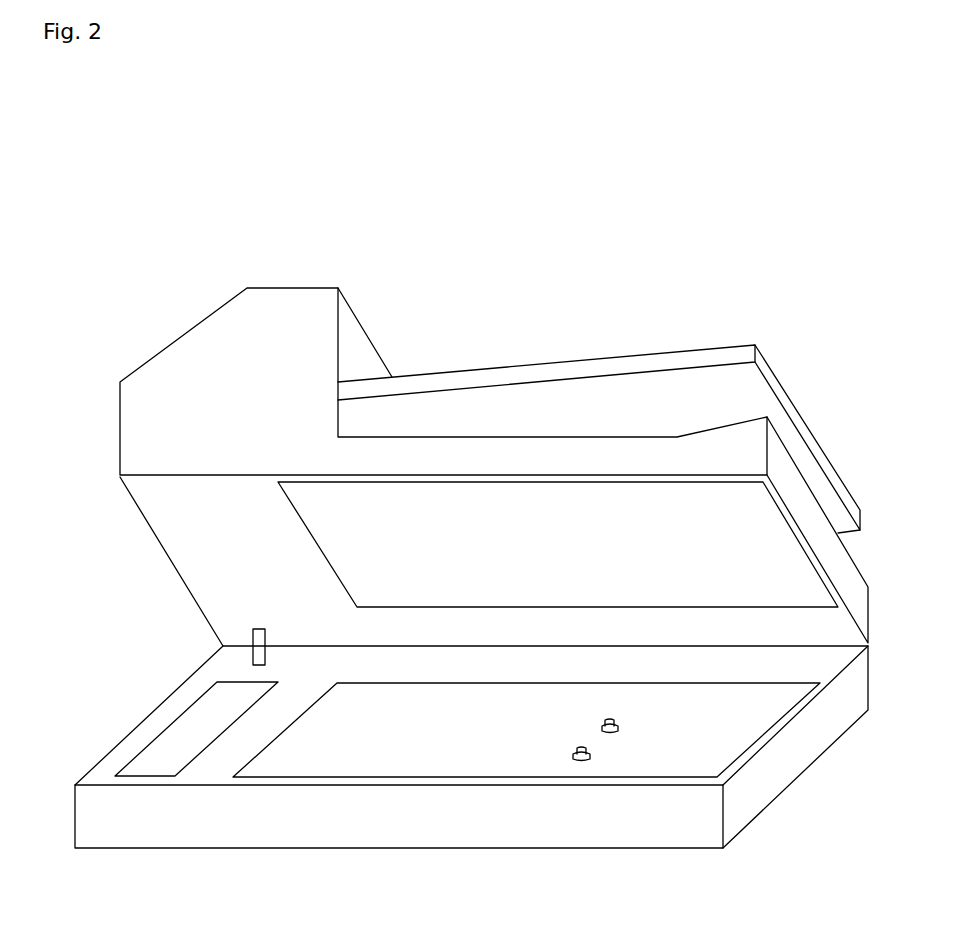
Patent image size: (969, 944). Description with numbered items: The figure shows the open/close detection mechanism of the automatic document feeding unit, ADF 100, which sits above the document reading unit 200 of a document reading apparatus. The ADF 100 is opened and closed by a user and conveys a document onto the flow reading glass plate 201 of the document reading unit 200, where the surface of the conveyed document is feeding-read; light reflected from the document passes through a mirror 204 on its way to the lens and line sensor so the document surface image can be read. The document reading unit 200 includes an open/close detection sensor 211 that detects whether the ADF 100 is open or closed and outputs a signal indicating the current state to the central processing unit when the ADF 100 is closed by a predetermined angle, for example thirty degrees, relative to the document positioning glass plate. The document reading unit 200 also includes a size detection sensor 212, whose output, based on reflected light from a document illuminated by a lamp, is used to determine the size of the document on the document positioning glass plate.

The automatic document feeding unit (ADF) 100 is at (148, 361).
The document reading unit 200 is at (612, 848).
The flow reading glass plate 201 is at (188, 708).
The mirror 204 is at (652, 682).
The open/close detection sensor 211 is at (258, 628).
The size detection sensor 212 is at (590, 748).